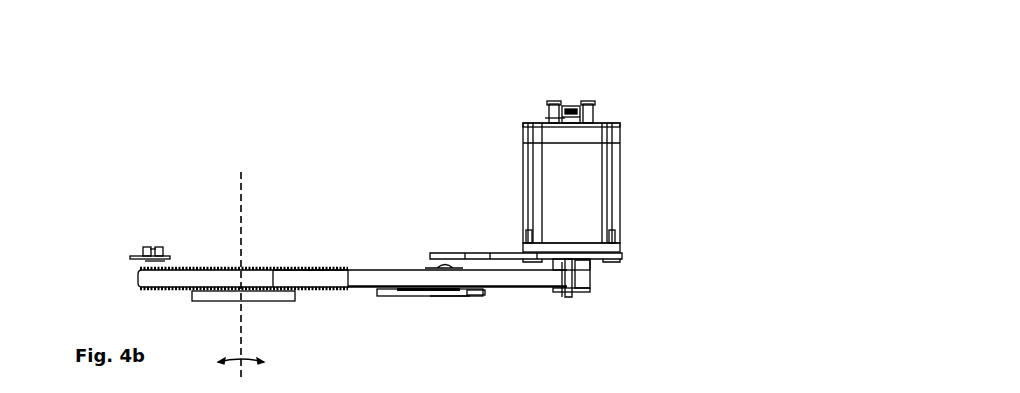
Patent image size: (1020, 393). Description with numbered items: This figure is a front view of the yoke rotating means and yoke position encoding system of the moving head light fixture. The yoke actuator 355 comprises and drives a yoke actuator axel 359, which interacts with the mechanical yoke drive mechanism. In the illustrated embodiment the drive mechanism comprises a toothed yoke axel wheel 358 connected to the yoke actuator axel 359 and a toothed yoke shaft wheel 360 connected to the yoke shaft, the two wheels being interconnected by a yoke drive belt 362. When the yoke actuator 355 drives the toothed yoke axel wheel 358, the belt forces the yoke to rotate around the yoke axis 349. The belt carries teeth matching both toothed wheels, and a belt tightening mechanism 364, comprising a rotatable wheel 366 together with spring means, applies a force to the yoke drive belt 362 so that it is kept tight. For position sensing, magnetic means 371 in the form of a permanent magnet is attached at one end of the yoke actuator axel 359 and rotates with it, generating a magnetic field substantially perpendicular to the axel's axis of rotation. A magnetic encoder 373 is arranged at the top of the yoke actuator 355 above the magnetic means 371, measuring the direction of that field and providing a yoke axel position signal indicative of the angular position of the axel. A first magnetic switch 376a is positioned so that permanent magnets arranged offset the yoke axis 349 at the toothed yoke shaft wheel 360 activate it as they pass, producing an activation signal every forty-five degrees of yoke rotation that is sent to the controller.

The yoke axis 349 is at (237, 186).
The yoke actuator 355 is at (571, 187).
The toothed yoke axel wheel 358 is at (590, 292).
The yoke actuator axel 359 is at (614, 107).
The toothed yoke shaft wheel 360 is at (158, 292).
The yoke drive belt 362 is at (360, 290).
The belt tightening mechanism 364 is at (428, 304).
The rotatable wheel 366 is at (450, 292).
The magnetic means 371 is at (548, 117).
The magnetic encoder 373 is at (570, 106).
The first magnetic switch 376a is at (155, 250).